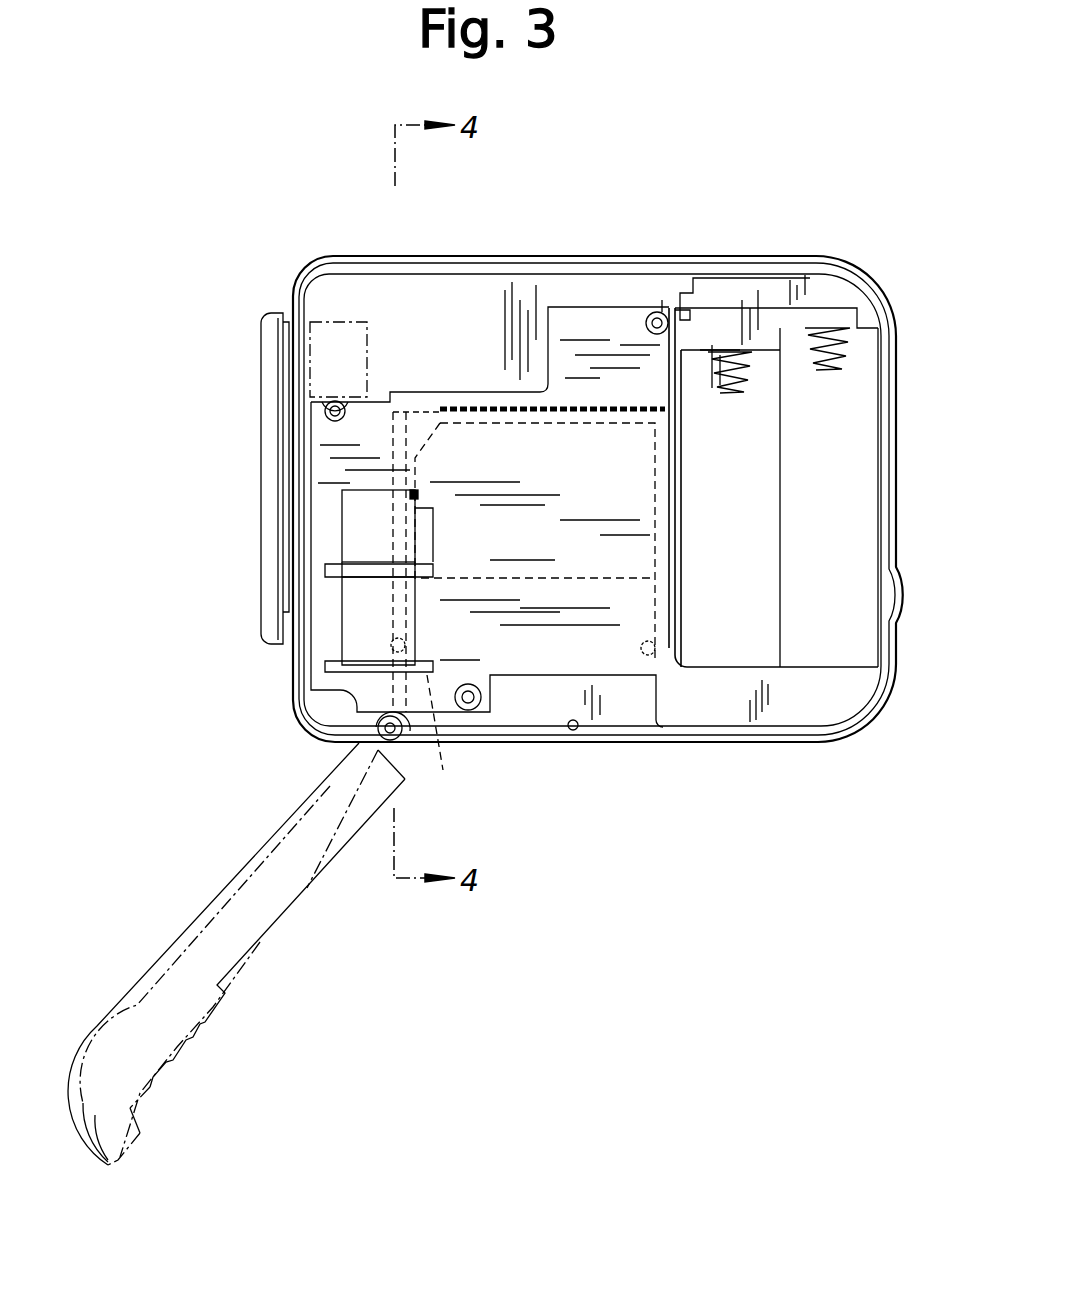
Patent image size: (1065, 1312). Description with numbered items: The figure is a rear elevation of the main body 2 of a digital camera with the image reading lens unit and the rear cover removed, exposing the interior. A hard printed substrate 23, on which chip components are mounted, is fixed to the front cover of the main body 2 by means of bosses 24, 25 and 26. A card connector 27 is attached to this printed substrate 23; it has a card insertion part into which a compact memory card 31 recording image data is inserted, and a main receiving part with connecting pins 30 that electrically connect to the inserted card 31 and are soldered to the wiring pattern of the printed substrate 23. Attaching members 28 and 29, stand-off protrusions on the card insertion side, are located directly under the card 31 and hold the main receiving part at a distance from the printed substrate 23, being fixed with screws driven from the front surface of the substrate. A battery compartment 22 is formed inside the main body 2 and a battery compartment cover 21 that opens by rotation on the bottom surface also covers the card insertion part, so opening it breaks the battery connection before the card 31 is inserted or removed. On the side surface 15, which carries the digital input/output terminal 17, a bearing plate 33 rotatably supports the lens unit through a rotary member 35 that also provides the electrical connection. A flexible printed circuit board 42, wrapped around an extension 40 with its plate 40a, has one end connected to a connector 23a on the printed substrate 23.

The main body 2 is at (418, 256).
The side surface 15 is at (293, 296).
The digital input/output terminal 17 is at (338, 322).
The battery compartment cover 21 is at (221, 891).
The battery compartment 22 is at (817, 628).
The printed substrate 23 is at (605, 318).
The connector 23a is at (433, 667).
The boss 24 is at (325, 411).
The boss 25 is at (661, 310).
The boss 26 is at (473, 709).
The card connector 27 is at (662, 597).
The attaching member 28 is at (432, 720).
The attaching member 29 is at (677, 675).
The connecting pins 30 is at (467, 406).
The compact memory card 31 is at (623, 713).
The bearing plate 33 is at (289, 480).
The rotary member 35 is at (262, 441).
The extension 40 is at (428, 521).
The mounting plate 40a is at (433, 567).
The flexible printed circuit board 42 is at (418, 494).